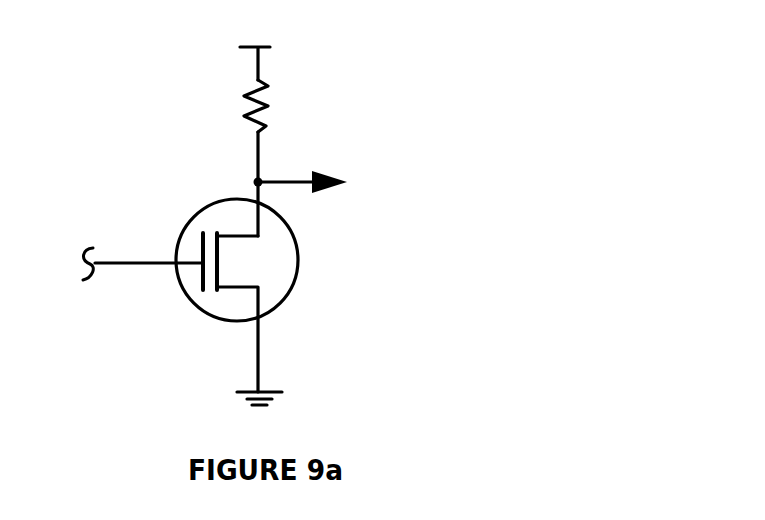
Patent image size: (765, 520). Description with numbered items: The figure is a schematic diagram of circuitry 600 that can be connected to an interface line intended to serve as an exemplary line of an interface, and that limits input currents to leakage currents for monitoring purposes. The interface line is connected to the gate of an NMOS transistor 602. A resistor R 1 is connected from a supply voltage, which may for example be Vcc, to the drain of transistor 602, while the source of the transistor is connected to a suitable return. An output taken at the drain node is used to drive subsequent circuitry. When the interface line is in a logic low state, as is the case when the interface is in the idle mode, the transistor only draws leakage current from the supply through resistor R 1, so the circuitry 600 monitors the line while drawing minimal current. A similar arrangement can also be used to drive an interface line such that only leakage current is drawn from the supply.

The circuitry 600 is at (412, 50).
The NMOS transistor 602 is at (300, 263).
The resistor R1 1 is at (281, 107).